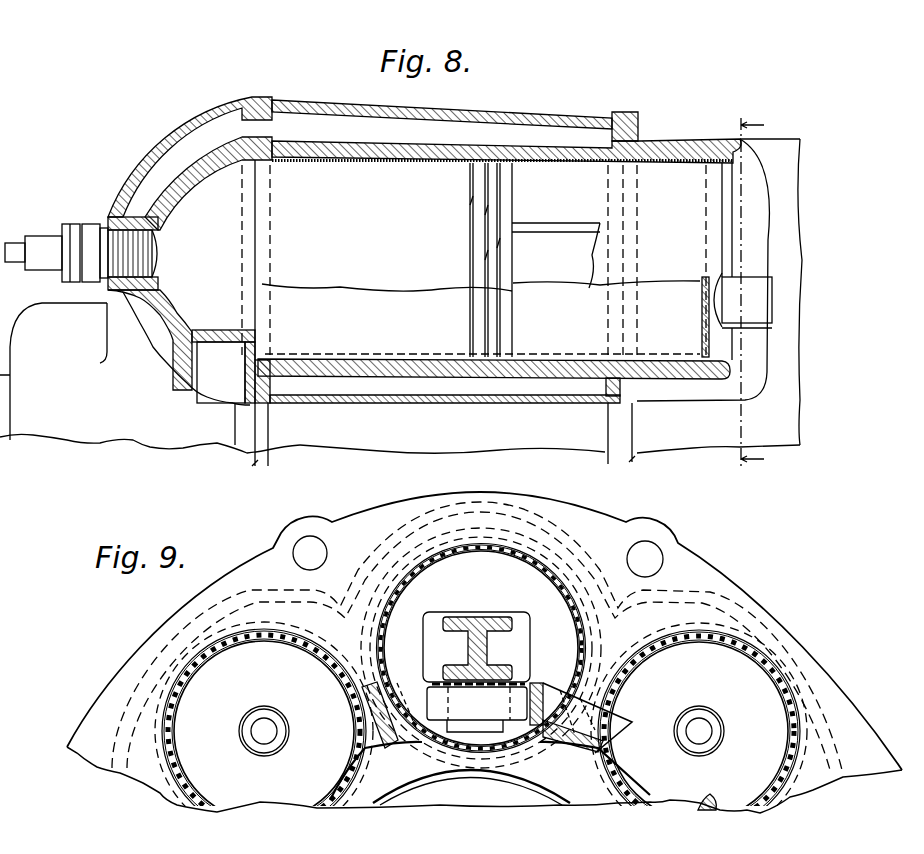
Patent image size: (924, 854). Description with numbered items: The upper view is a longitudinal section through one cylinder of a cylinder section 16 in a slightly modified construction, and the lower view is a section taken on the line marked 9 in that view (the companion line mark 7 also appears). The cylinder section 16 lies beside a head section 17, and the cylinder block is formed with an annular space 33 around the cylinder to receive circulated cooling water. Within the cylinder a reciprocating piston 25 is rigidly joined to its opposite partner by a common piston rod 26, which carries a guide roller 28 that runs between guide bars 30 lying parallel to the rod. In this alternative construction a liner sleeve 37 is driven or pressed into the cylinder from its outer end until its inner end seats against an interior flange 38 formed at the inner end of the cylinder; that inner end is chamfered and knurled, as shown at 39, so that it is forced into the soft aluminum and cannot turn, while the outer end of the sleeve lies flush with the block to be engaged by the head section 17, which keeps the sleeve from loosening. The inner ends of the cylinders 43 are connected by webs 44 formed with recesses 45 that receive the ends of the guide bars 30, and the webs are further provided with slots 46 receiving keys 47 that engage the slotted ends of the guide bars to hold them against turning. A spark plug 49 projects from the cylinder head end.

In FIG. 8, the section line indicator 7 is at (747, 284).
In FIG. 8, the section line indicator 9 is at (747, 475).
In FIG. 8, the cylinder section 16 is at (481, 121).
In FIG. 9, the cylinder section 16 is at (232, 582).
In FIG. 8, the head section 17 is at (158, 142).
In FIG. 8, the reciprocating piston 25 is at (469, 268).
In FIG. 9, the reciprocating piston 25 is at (476, 633).
In FIG. 8, the piston rod 26 is at (548, 240).
In FIG. 9, the piston rod 26 is at (463, 620).
In FIG. 9, the guide roller 28 is at (427, 700).
In FIG. 8, the guide bar 30 is at (753, 280).
In FIG. 9, the guide bar 30 is at (608, 738).
In FIG. 8, the annular space 33 is at (548, 133).
In FIG. 8, the liner sleeve 37 is at (481, 296).
In FIG. 8, the interior flange 38 is at (715, 167).
In FIG. 8, the chamfered and knurled end 39 is at (702, 333).
In FIG. 8, the cylinder 43 is at (494, 381).
In FIG. 9, the web 44 is at (575, 768).
In FIG. 9, the recess 45 is at (423, 670).
In FIG. 9, the slot 46 is at (490, 773).
In FIG. 9, the key 47 is at (561, 733).
In FIG. 8, the spark plug 49 is at (40, 248).